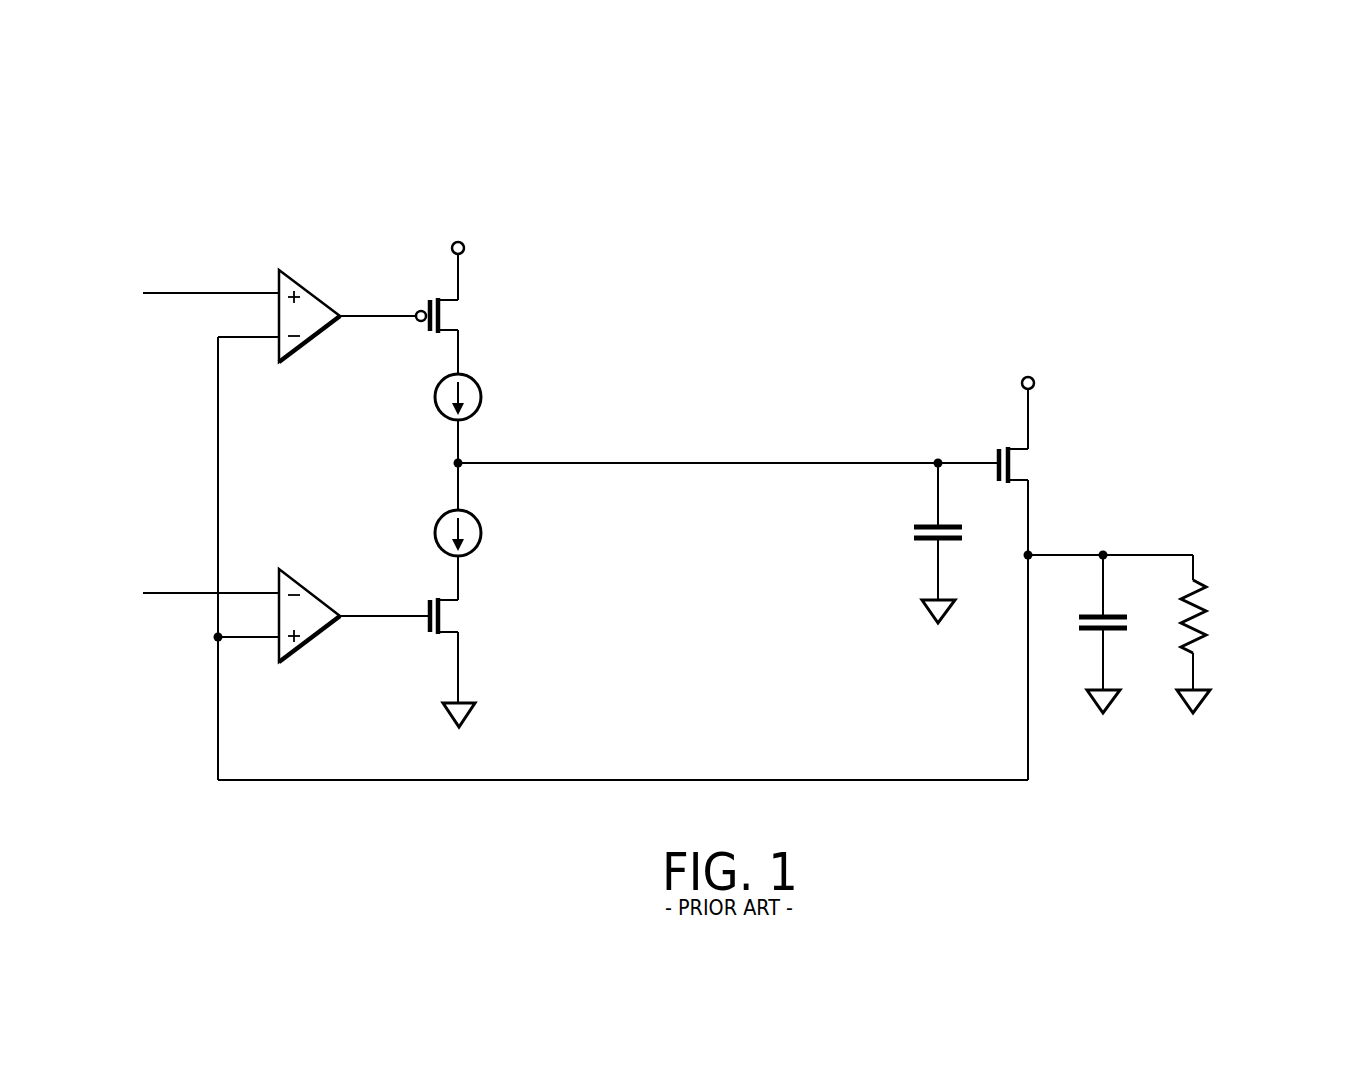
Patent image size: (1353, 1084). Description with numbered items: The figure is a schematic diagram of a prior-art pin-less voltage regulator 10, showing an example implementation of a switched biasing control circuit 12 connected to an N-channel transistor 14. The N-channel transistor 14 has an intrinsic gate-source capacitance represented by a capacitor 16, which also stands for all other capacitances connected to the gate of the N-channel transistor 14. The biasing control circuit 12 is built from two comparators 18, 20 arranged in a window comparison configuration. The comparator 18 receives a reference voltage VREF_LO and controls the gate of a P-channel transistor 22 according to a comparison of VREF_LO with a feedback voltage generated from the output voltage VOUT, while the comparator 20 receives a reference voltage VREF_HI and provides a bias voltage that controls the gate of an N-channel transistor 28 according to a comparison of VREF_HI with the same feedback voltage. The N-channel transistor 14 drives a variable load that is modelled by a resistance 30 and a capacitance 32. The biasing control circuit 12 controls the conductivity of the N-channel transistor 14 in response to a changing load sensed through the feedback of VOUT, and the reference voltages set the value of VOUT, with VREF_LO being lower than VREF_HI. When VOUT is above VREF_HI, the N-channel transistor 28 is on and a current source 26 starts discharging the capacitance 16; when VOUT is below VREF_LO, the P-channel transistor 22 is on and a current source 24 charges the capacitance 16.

The pin-less voltage regulator 10 is at (1057, 162).
The switched biasing control circuit 12 is at (534, 208).
The N-channel transistor 14 is at (1015, 461).
The capacitor 16 is at (950, 541).
The comparator 18 is at (313, 341).
The comparator 20 is at (309, 584).
The P-channel transistor 22 is at (442, 313).
The current source 24 is at (435, 397).
The current source 26 is at (435, 533).
The N-channel transistor 28 is at (445, 612).
The resistance 30 is at (1205, 607).
The capacitance 32 is at (1115, 632).